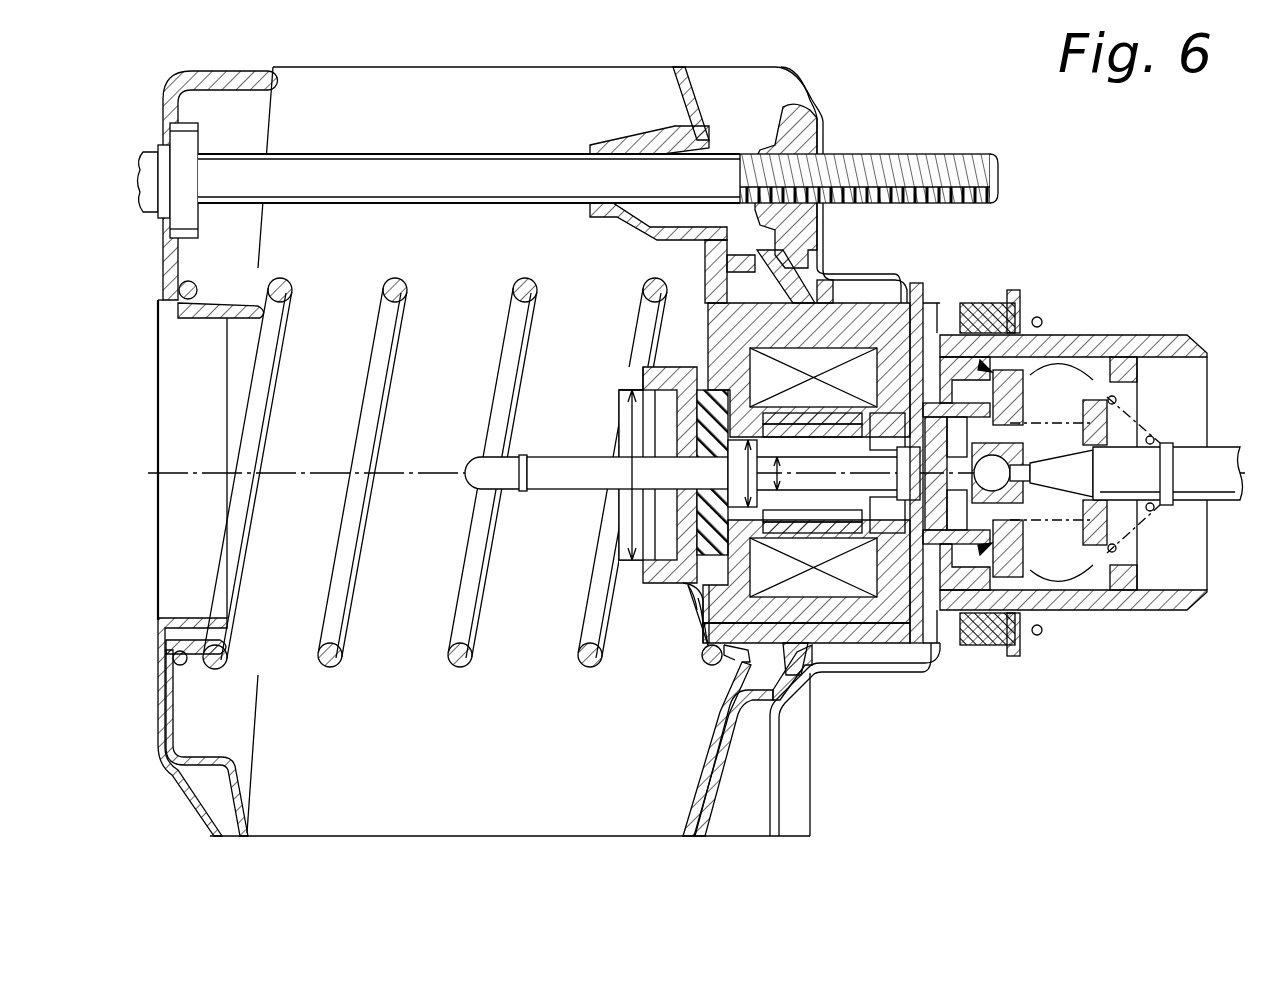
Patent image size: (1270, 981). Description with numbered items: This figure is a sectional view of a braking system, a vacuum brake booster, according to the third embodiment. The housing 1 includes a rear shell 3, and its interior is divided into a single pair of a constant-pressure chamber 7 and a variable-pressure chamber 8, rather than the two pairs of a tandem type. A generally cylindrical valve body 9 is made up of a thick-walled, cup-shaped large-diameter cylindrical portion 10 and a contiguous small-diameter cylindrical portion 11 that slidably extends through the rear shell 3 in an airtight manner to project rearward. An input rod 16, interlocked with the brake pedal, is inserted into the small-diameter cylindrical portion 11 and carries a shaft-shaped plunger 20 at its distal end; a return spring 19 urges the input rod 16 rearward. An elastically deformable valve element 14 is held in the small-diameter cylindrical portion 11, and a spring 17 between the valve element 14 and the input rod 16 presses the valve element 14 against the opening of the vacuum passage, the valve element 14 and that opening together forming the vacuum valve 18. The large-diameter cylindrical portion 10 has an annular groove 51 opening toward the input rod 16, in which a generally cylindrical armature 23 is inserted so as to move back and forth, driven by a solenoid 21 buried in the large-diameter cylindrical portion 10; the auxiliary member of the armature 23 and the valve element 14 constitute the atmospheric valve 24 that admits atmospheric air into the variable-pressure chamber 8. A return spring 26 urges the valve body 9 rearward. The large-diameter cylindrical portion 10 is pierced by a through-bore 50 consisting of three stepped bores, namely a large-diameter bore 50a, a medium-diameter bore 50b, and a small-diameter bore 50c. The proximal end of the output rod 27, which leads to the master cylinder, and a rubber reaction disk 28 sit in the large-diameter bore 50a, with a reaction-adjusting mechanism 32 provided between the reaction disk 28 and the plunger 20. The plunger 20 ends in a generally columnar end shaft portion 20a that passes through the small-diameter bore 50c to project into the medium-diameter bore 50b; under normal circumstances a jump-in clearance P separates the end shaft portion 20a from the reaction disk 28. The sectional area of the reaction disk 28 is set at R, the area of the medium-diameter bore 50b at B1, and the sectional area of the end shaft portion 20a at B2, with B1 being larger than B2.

The housing 1 is at (798, 54).
The rear shell 3 is at (830, 112).
The constant-pressure chamber 7 is at (488, 92).
The variable-pressure chamber 8 is at (758, 100).
The valve body 9 is at (845, 425).
The large-diameter cylindrical portion 10 is at (908, 280).
The small-diameter cylindrical portion 11 is at (1148, 333).
The valve element 14 is at (1072, 533).
The input rod 16 is at (1222, 452).
The spring 17 is at (1117, 575).
The vacuum valve 18 is at (1023, 310).
The return spring 19 is at (1150, 520).
The plunger 20 is at (945, 640).
The end shaft portion 20a is at (640, 388).
The solenoid 21 is at (818, 578).
The armature 23 is at (905, 580).
The atmospheric valve 24 is at (1027, 627).
The return spring 26 is at (342, 668).
The output rod 27 is at (577, 489).
The reaction disk 28 is at (660, 365).
The reaction-adjusting mechanism 32 is at (712, 556).
The through-bore 50 is at (572, 688).
The large-diameter bore 50a is at (700, 572).
The medium-diameter bore 50b is at (697, 585).
The small-diameter bore 50c is at (707, 603).
The annular groove 51 is at (822, 405).
The gap (jump-in clearance) P is at (537, 491).
The sectional area of reaction disk R is at (626, 421).
The area of medium-diameter bore B1 is at (745, 505).
The sectional area of end shaft portion B2 is at (775, 458).